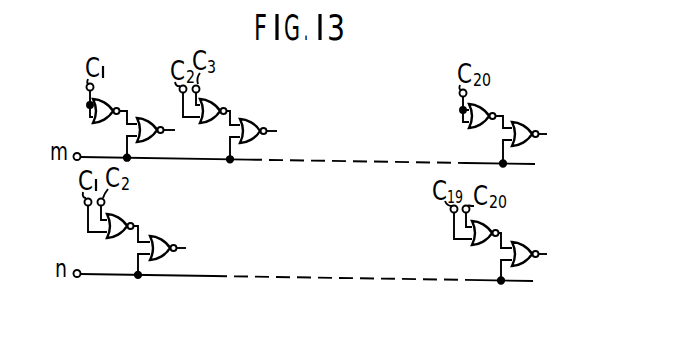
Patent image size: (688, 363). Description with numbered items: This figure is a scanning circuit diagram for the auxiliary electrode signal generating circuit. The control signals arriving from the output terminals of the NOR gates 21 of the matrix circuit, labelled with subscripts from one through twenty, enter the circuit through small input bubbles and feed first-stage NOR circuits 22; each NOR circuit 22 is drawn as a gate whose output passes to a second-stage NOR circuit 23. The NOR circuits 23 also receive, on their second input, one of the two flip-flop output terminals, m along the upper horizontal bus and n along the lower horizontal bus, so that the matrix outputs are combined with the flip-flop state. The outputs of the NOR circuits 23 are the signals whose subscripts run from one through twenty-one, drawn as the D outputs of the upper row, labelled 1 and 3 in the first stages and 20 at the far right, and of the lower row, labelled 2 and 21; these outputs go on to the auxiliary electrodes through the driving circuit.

The NOR circuit 22 is at (94, 122).
The NOR circuit 23 is at (145, 118).
The output signal D1 1 is at (196, 129).
The NOR gate producing output D2 2 is at (176, 255).
The NOR gate producing output D3 3 is at (267, 139).
The NOR gate producing output D20 20 is at (544, 143).
The NOR gate 21 is at (542, 261).